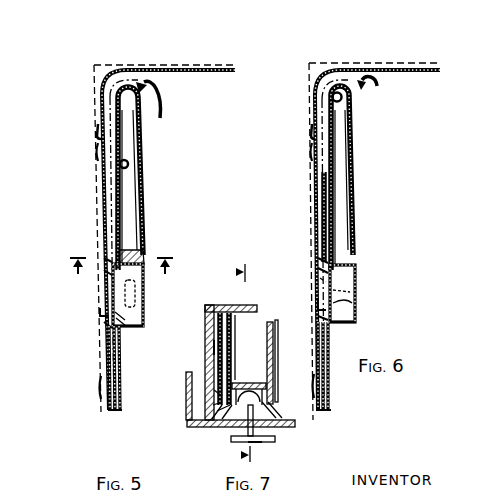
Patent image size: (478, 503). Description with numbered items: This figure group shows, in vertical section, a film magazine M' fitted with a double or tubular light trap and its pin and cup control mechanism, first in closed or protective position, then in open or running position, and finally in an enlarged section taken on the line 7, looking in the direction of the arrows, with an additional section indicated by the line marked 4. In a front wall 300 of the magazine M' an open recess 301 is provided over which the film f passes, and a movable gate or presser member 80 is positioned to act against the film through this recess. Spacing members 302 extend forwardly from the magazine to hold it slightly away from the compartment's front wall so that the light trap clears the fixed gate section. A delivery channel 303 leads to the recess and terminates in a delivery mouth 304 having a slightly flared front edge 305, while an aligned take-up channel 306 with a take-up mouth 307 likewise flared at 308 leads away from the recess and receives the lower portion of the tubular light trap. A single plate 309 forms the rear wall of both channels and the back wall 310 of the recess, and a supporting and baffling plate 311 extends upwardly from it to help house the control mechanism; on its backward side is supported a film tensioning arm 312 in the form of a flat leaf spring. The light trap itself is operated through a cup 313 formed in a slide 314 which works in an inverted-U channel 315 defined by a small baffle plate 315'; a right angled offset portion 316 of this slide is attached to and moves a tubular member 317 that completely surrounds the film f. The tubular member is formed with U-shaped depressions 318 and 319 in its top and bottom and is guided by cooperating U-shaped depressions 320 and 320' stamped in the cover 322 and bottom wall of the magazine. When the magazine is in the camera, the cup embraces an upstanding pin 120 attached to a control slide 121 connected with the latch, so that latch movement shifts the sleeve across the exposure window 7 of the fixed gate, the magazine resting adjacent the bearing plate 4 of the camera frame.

In FIG. 5, the magazine M' is at (163, 223).
In FIG. 6, the magazine M' is at (374, 227).
In FIG. 5, the film f is at (112, 89).
In FIG. 6, the film f is at (330, 90).
In FIG. 7, the film f is at (208, 323).
In FIG. 5, the front wall 300 is at (104, 170).
In FIG. 6, the front wall 300 is at (317, 170).
In FIG. 5, the open recess 301 is at (141, 303).
In FIG. 6, the open recess 301 is at (353, 283).
In FIG. 7, the open recess 301 is at (216, 406).
In FIG. 5, the spacing members 302 is at (95, 146).
In FIG. 6, the spacing members 302 is at (310, 146).
In FIG. 7, the spacing members 302 is at (216, 394).
In FIG. 5, the delivery channel 303 is at (104, 130).
In FIG. 6, the delivery channel 303 is at (316, 130).
In FIG. 5, the delivery mouth 304 is at (105, 273).
In FIG. 6, the delivery mouth 304 is at (317, 268).
In FIG. 5, the flared front edge 305 is at (104, 262).
In FIG. 6, the flared front edge 305 is at (318, 260).
In FIG. 5, the take-up channel 306 is at (110, 408).
In FIG. 6, the take-up channel 306 is at (329, 400).
In FIG. 5, the take-up mouth 307 is at (100, 313).
In FIG. 6, the take-up mouth 307 is at (318, 308).
In FIG. 5, the flare of take-up mouth 308 is at (105, 326).
In FIG. 6, the flare of take-up mouth 308 is at (318, 318).
In FIG. 5, the plate 309 is at (121, 372).
In FIG. 6, the plate 309 is at (331, 335).
In FIG. 5, the back wall of recess 310 is at (126, 327).
In FIG. 6, the back wall of recess 310 is at (353, 311).
In FIG. 5, the supporting and baffling plate 311 is at (139, 130).
In FIG. 6, the supporting and baffling plate 311 is at (353, 130).
In FIG. 5, the film tensioning arm 312 is at (160, 117).
In FIG. 6, the film tensioning arm 312 is at (357, 183).
In FIG. 5, the cup 313 is at (129, 164).
In FIG. 6, the cup 313 is at (342, 98).
In FIG. 7, the cup 313 is at (271, 360).
In FIG. 5, the slide 314 is at (128, 212).
In FIG. 6, the slide 314 is at (341, 145).
In FIG. 7, the slide 314 is at (277, 393).
In FIG. 7, the channel 315 is at (228, 428).
In FIG. 7, the baffle plate 315' is at (253, 369).
In FIG. 5, the right angled offset portion 316 is at (136, 258).
In FIG. 5, the tubular member 317 is at (120, 314).
In FIG. 6, the tubular member 317 is at (320, 210).
In FIG. 7, the tubular member 317 is at (210, 347).
In FIG. 7, the U-shaped depression 318 is at (209, 306).
In FIG. 7, the U-shaped depression 319 is at (194, 425).
In FIG. 7, the U-shaped depression 320 is at (231, 294).
In FIG. 7, the U-shaped depression 320' is at (232, 430).
In FIG. 6, the cover 322 is at (353, 302).
In FIG. 5, the movable gate 80 is at (143, 293).
In FIG. 6, the movable gate 80 is at (352, 292).
In FIG. 5, the exposure window 7 is at (63, 315).
In FIG. 6, the exposure window 7 is at (320, 278).
In FIG. 7, the bearing plate 4 is at (237, 364).
In FIG. 7, the upstanding pin 120 is at (275, 429).
In FIG. 7, the control slide 121 is at (264, 442).